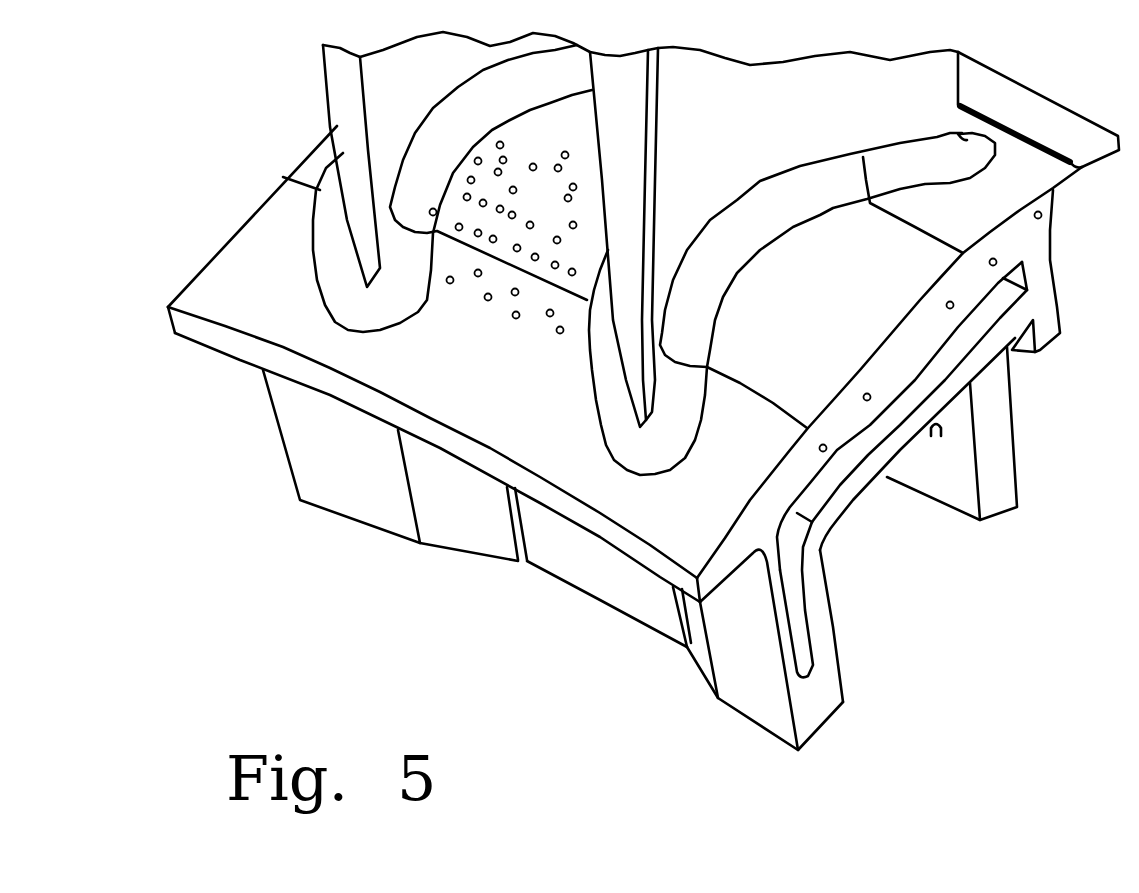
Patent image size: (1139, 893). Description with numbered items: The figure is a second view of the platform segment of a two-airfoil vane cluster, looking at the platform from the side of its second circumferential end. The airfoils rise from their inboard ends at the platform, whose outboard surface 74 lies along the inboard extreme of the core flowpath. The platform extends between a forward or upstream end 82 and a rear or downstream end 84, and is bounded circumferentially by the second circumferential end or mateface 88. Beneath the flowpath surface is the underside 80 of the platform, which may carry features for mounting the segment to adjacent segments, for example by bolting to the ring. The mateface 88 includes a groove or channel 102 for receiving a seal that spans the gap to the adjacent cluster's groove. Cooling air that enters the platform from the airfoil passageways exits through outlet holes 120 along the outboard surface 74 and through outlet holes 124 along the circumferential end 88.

The outboard surface 74 is at (1010, 183).
The forward/upstream end 82 is at (1030, 92).
The rear/downstream end 84 is at (630, 547).
The underside 80 is at (751, 686).
The groove or channel 102 is at (955, 347).
The second circumferential end or mateface 88 is at (833, 517).
The outlet holes 124 is at (827, 448).
The outlet holes 120 is at (518, 318).